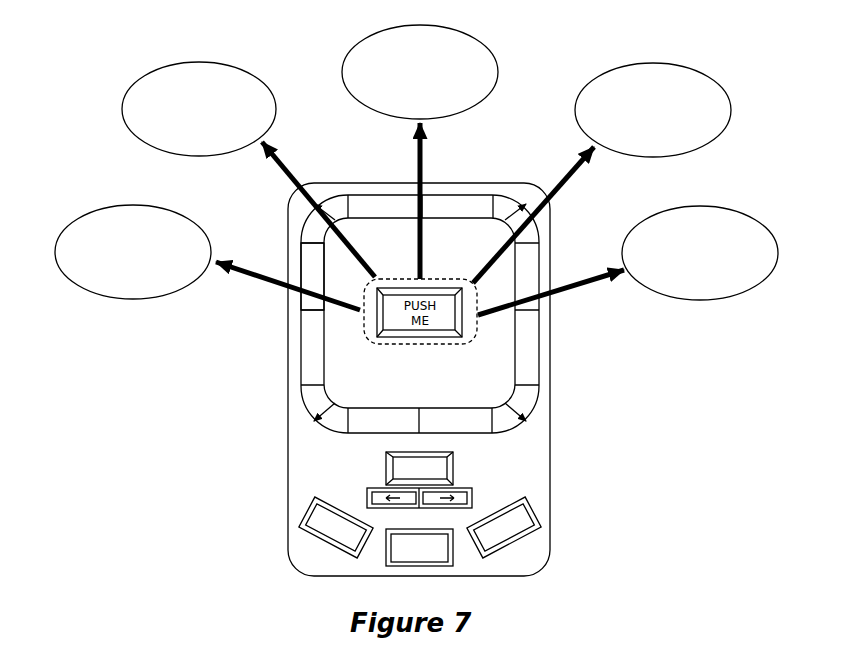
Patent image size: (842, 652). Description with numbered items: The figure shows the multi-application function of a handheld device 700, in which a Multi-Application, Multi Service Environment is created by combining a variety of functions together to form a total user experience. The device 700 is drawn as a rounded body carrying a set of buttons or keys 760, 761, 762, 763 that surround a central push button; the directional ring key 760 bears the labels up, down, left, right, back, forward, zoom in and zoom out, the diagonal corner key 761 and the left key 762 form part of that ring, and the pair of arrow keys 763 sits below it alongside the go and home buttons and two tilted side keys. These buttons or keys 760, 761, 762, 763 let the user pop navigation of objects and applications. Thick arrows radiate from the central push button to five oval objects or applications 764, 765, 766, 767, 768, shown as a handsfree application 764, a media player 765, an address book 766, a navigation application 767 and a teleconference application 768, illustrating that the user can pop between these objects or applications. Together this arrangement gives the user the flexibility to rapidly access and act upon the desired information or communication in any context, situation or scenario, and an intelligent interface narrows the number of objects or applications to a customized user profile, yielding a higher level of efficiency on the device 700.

The device 700 is at (180, 419).
The button or key 760 is at (451, 194).
The button or key 761 is at (517, 194).
The button or key 762 is at (290, 252).
The button or key 763 is at (366, 488).
The object/application 764 is at (352, 46).
The object/application 765 is at (157, 64).
The object/application 766 is at (85, 213).
The object/application 767 is at (690, 206).
The object/application 768 is at (590, 78).